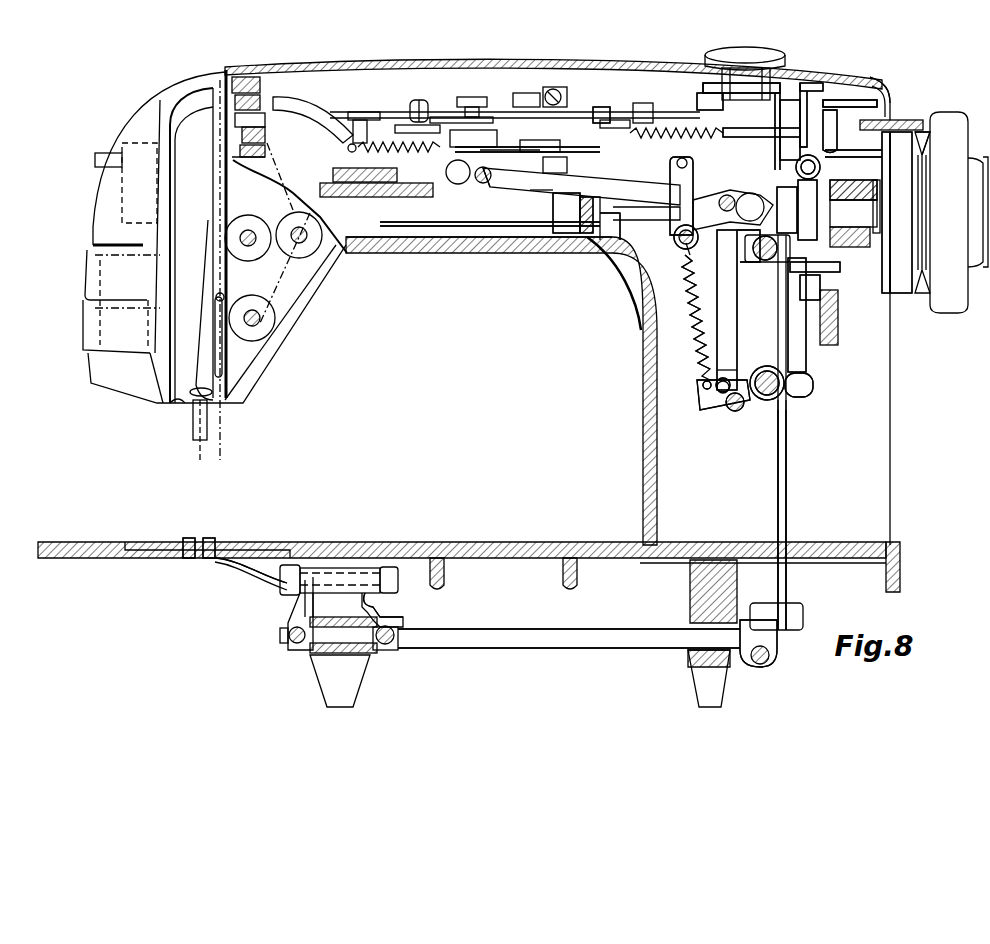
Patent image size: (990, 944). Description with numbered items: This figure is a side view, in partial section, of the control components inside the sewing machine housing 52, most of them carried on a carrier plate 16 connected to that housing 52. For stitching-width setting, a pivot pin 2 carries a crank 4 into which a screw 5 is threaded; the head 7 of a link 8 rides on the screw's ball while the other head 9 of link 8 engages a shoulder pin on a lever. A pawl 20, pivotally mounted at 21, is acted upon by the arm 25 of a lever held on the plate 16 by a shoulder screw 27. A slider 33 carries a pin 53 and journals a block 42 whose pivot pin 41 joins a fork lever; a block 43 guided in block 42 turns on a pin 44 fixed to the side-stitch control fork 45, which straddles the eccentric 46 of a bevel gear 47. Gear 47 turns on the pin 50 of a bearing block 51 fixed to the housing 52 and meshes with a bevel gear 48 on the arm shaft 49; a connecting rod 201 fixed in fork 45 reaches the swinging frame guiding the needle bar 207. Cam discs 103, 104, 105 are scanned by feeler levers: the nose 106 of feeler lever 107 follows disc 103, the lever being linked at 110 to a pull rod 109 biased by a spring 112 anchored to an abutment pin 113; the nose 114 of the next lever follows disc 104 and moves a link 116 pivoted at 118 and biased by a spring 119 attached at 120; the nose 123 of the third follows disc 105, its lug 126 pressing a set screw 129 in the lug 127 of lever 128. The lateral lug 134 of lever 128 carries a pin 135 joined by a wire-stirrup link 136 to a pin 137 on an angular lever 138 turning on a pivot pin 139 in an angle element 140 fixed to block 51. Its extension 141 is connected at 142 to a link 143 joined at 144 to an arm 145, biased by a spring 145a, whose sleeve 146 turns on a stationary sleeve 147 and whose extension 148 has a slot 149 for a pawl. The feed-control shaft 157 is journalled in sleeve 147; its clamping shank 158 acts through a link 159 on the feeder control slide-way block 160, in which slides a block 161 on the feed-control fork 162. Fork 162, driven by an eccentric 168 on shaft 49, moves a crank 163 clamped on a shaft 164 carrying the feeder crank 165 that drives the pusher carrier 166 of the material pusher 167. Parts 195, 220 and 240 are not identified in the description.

The pivot pin 2 is at (777, 250).
The crank 4 is at (748, 263).
The screw 5 is at (763, 217).
The head 7 is at (762, 200).
The link 8 is at (537, 198).
The head 9 is at (452, 180).
The carrier plate 16 is at (362, 112).
The pawl 20 is at (468, 123).
The pivot 21 is at (482, 150).
The arm 25 is at (493, 128).
The shoulder screw 27 is at (418, 133).
The slider 33 is at (605, 108).
The pivot pin 41 is at (562, 92).
The block 42 is at (523, 153).
The block 43 is at (558, 200).
The pin 44 is at (580, 200).
The side-stitch control fork 45 is at (500, 182).
The eccentric 46 is at (672, 240).
The bevel gear 47 is at (593, 187).
The bevel gear 48 is at (590, 242).
The arm shaft 49 is at (443, 228).
The pin 50 is at (647, 190).
The bearing block 51 is at (589, 240).
The housing 52 is at (397, 254).
The pin 53 is at (540, 198).
The cam disc 103 is at (733, 130).
The cam disc 104 is at (748, 88).
The cam disc 105 is at (697, 108).
The nose 106 is at (803, 84).
The feeler lever 107 is at (825, 99).
The pull rod 109 is at (483, 184).
The link point 110 is at (793, 112).
The spring 112 is at (395, 152).
The abutment pin 113 is at (348, 149).
The nose 114 is at (868, 84).
The link 116 is at (781, 92).
The pivot connection 118 is at (604, 147).
The spring 119 is at (705, 92).
The holder pin attachment 120 is at (630, 127).
The nose 123 is at (830, 120).
The lug 126 is at (825, 100).
The lug 127 is at (930, 138).
The lever 128 is at (860, 150).
The set screw 129 is at (870, 118).
The lateral lug 134 is at (860, 163).
The pin 135 is at (815, 168).
The link 136 is at (820, 168).
The pin 137 is at (761, 139).
The angular lever 138 is at (607, 267).
The pivot pin 139 is at (621, 276).
The angle element 140 is at (680, 250).
The extension 141 is at (690, 258).
The connection 142 is at (733, 275).
The link 143 is at (720, 298).
The pivot joint 144 is at (718, 393).
The arm 145 is at (717, 407).
The spring 145a is at (693, 340).
The sleeve 146 is at (783, 405).
The sleeve 147 is at (764, 397).
The extension 148 is at (733, 410).
The slot 149 is at (738, 385).
The shaft 157 is at (781, 396).
The clamping shank 158 is at (810, 387).
The link 159 is at (807, 350).
The feeder control slide-way block 160 is at (813, 267).
The block 161 is at (812, 280).
The feed-control fork 162 is at (779, 513).
The crank 163 is at (772, 658).
The shaft 164 is at (558, 650).
The feeder crank 165 is at (403, 614).
The pusher carrier 166 is at (277, 577).
The material pusher 167 is at (205, 540).
The eccentric 168 is at (877, 187).
The knob 195 is at (745, 48).
The connecting rod 201 is at (292, 95).
The needle bar 207 is at (207, 410).
The spindle 220 is at (713, 110).
The arm cover 240 is at (415, 65).